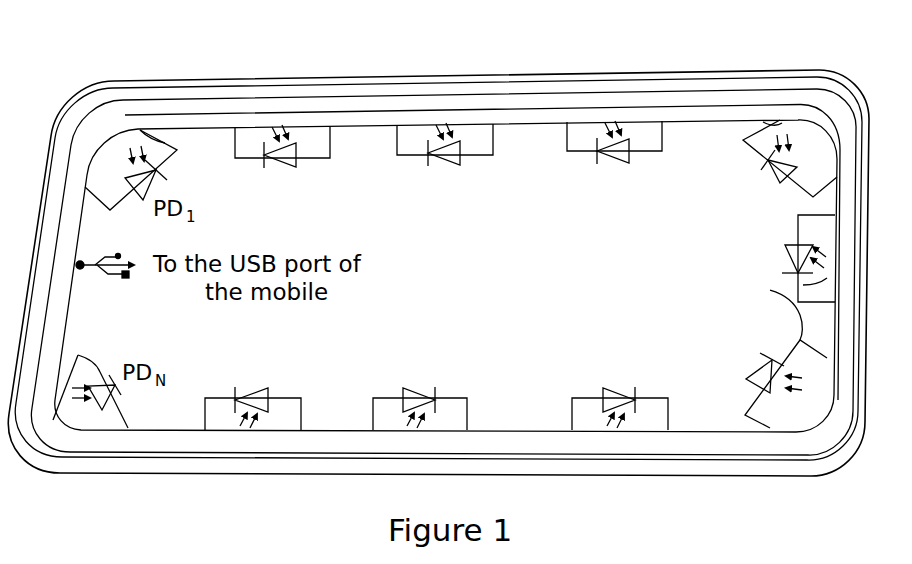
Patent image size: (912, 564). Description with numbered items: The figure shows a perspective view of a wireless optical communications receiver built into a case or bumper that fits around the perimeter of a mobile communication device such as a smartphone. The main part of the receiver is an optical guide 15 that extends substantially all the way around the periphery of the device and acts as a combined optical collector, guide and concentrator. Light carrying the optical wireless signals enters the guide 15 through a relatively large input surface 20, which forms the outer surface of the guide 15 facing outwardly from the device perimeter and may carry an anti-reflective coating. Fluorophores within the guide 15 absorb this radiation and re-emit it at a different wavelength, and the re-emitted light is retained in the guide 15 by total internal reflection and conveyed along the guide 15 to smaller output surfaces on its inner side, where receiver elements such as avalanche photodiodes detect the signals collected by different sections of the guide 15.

The optical guide 15 is at (664, 462).
The input surface 20 is at (162, 80).